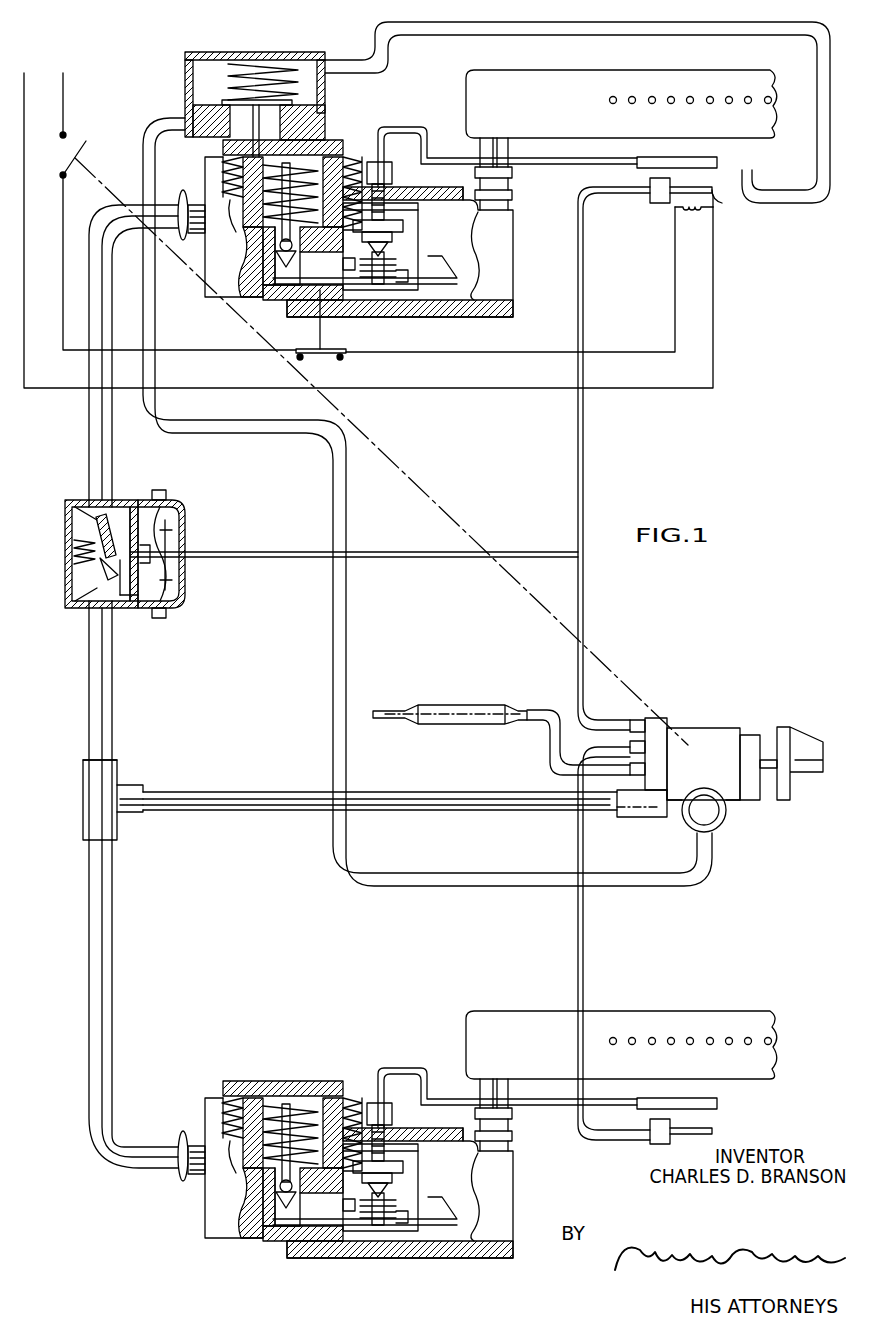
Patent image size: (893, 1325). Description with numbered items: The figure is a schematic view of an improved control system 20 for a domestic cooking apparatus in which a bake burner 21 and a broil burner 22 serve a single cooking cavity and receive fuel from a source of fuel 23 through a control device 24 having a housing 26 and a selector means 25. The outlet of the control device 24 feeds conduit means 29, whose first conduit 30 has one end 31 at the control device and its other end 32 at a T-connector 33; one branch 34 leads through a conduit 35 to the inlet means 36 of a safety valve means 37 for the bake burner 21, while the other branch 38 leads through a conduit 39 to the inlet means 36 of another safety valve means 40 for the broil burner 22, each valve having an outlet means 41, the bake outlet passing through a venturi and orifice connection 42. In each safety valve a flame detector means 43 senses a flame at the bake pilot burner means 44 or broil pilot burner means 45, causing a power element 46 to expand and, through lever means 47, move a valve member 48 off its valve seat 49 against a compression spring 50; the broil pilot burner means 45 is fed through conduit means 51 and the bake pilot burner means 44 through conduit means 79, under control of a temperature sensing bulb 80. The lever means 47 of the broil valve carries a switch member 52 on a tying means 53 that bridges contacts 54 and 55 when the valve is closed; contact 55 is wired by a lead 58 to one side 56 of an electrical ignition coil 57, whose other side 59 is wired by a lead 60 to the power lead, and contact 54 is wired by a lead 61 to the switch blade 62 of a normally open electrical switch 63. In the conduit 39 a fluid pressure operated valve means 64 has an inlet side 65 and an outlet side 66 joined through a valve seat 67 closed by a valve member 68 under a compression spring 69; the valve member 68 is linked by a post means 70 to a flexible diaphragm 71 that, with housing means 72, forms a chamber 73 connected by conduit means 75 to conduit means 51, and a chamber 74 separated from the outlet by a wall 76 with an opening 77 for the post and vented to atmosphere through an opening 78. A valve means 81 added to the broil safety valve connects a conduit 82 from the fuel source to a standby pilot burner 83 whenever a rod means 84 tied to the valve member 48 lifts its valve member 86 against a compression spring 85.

The control system 20 is at (438, 652).
The bake burner 21 is at (705, 1013).
The broil burner 22 is at (720, 78).
The source of fuel 23 is at (728, 818).
The control device 24 is at (710, 731).
The selector means 25 is at (812, 762).
The housing 26 is at (690, 734).
The conduit means 29 is at (309, 819).
The first conduit 30 is at (210, 792).
The one end 31 is at (608, 814).
The other end 32 is at (152, 806).
The T-connector 33 is at (118, 777).
The one branch 34 is at (83, 832).
The conduit 35 is at (90, 938).
The inlet means 36 is at (232, 228).
The safety valve means 37 is at (218, 1093).
The other branch 38 is at (84, 771).
The conduit 39 is at (90, 442).
The safety valve means 40 is at (518, 262).
The outlet means 41 is at (468, 296).
The venturi and orifice connection 42 is at (506, 1116).
The flame detector means 43 is at (718, 165).
The bake pilot burner means 44 is at (718, 1135).
The broil pilot burner means 45 is at (722, 203).
The power element 46 is at (395, 1190).
The lever means 47 is at (418, 300).
The valve member 48 is at (310, 222).
The valve seat 49 is at (255, 1205).
The compression spring 50 is at (313, 1100).
The conduit means 51 is at (585, 604).
The switch member 52 is at (332, 350).
The tying means 53 is at (316, 332).
The contact 54 is at (298, 360).
The contact 55 is at (342, 360).
The one side 56 is at (660, 210).
The electrical ignition coil 57 is at (688, 214).
The lead 58 is at (675, 302).
The other side 59 is at (716, 214).
The lead 60 is at (713, 300).
The lead 61 is at (207, 353).
The switch blade 62 is at (85, 147).
The electrical switch 63 is at (86, 126).
The fluid pressure operated valve means 64 is at (144, 556).
The inlet side 65 is at (85, 603).
The outlet side 66 is at (112, 512).
The valve seat 67 is at (68, 527).
The valve member 68 is at (72, 574).
The compression spring 69 is at (72, 553).
The post means 70 is at (150, 553).
The flexible diaphragm 71 is at (176, 508).
The housing means 72 is at (186, 522).
The chamber 73 is at (172, 574).
The chamber 74 is at (148, 600).
The conduit means 75 is at (388, 553).
The wall 76 is at (122, 603).
The opening 77 is at (121, 577).
The opening 78 is at (156, 494).
The conduit means 79 is at (585, 932).
The temperature sensing bulb 80 is at (463, 708).
The valve means 81 is at (186, 58).
The conduit 82 is at (348, 609).
The standby pilot burner 83 is at (752, 176).
The rod means 84 is at (328, 122).
The compression spring 85 is at (262, 62).
The valve member 86 is at (290, 106).